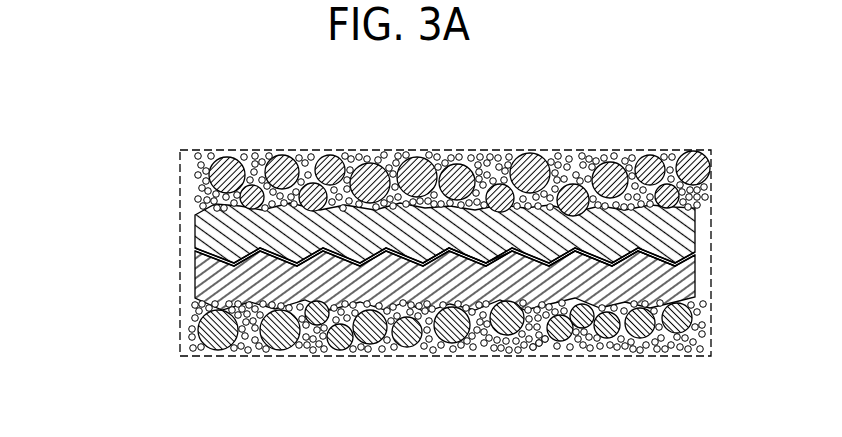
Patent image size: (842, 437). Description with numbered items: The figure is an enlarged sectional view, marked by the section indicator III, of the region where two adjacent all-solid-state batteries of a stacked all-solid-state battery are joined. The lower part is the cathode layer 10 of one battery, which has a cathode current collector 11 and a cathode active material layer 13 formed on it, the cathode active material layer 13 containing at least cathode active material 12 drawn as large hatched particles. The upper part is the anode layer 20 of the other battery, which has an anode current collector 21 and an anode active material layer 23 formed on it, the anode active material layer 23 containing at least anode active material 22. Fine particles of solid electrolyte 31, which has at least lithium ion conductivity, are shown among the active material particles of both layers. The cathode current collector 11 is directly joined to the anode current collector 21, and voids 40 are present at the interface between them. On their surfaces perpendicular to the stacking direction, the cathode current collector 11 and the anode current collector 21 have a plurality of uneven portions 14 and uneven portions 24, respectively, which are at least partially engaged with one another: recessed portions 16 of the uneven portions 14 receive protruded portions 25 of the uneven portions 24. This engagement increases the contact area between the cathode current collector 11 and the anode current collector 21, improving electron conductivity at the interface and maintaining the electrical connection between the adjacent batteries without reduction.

The cathode layer 10 is at (110, 250).
The cathode current collector 11 is at (172, 250).
The cathode active material 12 is at (700, 317).
The cathode active material layer 13 is at (172, 297).
The uneven portions 14 is at (568, 263).
The recessed portions 16 is at (653, 250).
The anode layer 20 is at (110, 152).
The anode current collector 21 is at (172, 203).
The anode active material 22 is at (708, 172).
The anode active material layer 23 is at (172, 153).
The uneven portions 24 is at (588, 245).
The protruded portions 25 is at (652, 253).
The solid electrolyte 31 is at (583, 160).
The voids 40 is at (434, 258).
The section indicator III is at (283, 150).